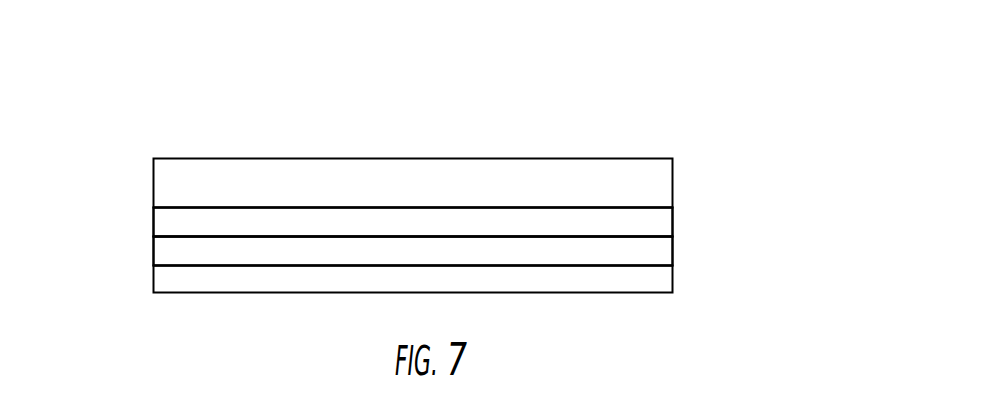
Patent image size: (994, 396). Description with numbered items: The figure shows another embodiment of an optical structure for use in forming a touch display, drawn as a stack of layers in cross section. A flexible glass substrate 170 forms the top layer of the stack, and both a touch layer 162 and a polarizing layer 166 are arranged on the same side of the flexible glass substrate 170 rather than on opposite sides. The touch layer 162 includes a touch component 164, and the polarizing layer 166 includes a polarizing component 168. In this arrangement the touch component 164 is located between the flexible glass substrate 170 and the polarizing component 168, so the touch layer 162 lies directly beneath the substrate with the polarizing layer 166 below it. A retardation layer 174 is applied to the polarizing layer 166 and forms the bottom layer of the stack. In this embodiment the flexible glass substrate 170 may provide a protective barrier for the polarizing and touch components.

The flexible glass substrate 170 is at (440, 176).
The touch component 164 is at (175, 225).
The touch layer 162 is at (690, 217).
The polarizing component 168 is at (173, 250).
The polarizing layer 166 is at (697, 247).
The retardation layer 174 is at (692, 274).